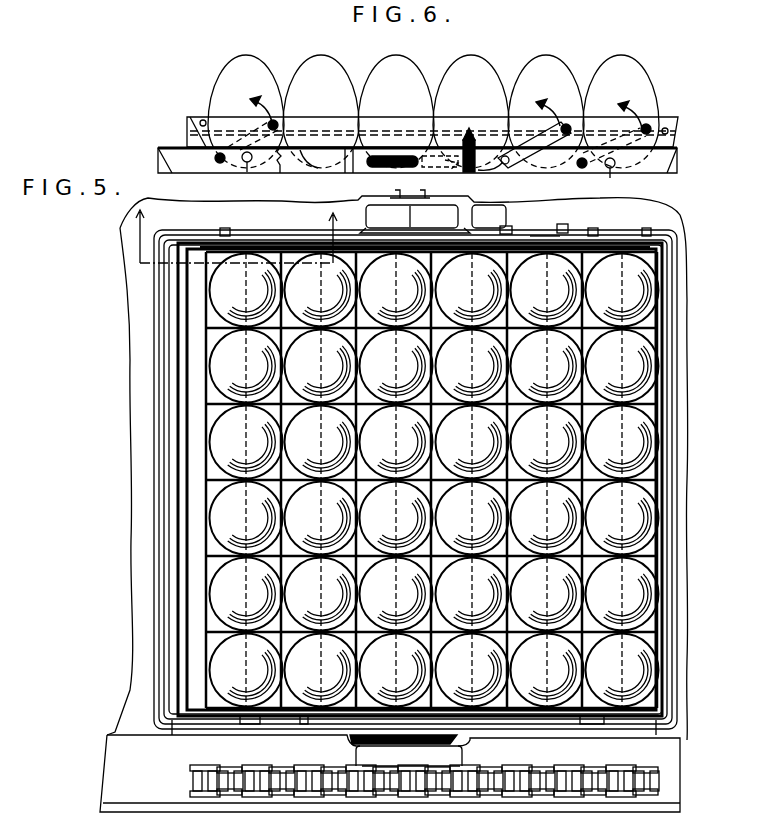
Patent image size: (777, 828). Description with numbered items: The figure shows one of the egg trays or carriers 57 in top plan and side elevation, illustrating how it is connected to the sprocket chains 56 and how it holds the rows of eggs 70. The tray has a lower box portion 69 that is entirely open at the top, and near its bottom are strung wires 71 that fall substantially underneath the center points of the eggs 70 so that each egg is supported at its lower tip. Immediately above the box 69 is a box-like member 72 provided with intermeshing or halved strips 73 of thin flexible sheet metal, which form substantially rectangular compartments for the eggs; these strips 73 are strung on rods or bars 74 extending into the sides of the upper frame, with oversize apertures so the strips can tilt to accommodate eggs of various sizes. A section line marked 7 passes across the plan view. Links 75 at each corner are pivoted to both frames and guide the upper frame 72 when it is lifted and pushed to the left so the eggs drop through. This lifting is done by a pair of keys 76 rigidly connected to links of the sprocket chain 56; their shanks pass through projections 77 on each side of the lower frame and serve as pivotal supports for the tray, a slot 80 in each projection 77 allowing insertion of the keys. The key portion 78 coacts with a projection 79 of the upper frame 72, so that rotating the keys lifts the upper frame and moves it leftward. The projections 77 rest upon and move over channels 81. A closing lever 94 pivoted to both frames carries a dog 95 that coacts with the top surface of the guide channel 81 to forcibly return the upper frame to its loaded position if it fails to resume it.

In FIG. 5, the section line 7- 7 is at (235, 248).
In FIG. 5, the sprocket chain 56 is at (205, 776).
In FIG. 6, the egg tray 57 is at (308, 162).
In FIG. 5, the egg tray 57 is at (172, 722).
In FIG. 6, the box portion 69 is at (206, 165).
In FIG. 5, the box portion 69 is at (168, 457).
In FIG. 6, the eggs 70 is at (240, 76).
In FIG. 5, the eggs 70 is at (444, 449).
In FIG. 5, the wires 71 is at (258, 252).
In FIG. 6, the box-like member 72 is at (207, 146).
In FIG. 5, the box-like member 72 is at (200, 472).
In FIG. 6, the intermeshing strips 73 is at (278, 166).
In FIG. 5, the intermeshing strips 73 is at (287, 550).
In FIG. 5, the rods 74 is at (200, 696).
In FIG. 6, the links 75 is at (247, 172).
In FIG. 5, the links 75 is at (226, 235).
In FIG. 6, the keys 76 is at (425, 168).
In FIG. 5, the keys 76 is at (410, 214).
In FIG. 5, the projections 77 is at (340, 211).
In FIG. 6, the key portion 78 is at (452, 170).
In FIG. 5, the key portion 78 is at (428, 215).
In FIG. 5, the projection 79 is at (343, 747).
In FIG. 6, the slot 80 is at (378, 168).
In FIG. 5, the channels 81 is at (181, 217).
In FIG. 6, the lever 94 is at (528, 150).
In FIG. 5, the lever 94 is at (540, 235).
In FIG. 6, the dog 95 is at (470, 173).
In FIG. 5, the dog 95 is at (476, 214).